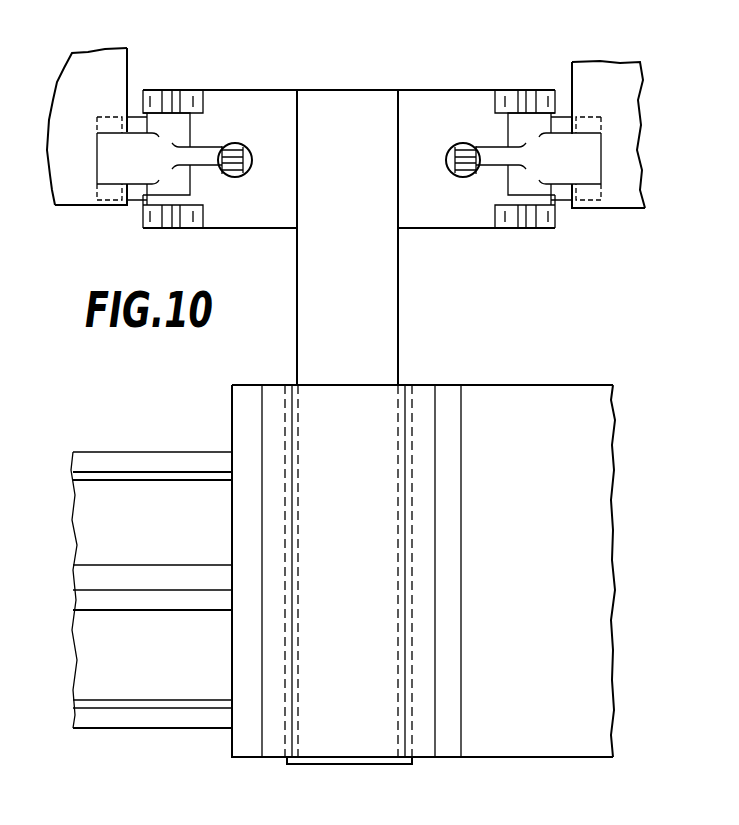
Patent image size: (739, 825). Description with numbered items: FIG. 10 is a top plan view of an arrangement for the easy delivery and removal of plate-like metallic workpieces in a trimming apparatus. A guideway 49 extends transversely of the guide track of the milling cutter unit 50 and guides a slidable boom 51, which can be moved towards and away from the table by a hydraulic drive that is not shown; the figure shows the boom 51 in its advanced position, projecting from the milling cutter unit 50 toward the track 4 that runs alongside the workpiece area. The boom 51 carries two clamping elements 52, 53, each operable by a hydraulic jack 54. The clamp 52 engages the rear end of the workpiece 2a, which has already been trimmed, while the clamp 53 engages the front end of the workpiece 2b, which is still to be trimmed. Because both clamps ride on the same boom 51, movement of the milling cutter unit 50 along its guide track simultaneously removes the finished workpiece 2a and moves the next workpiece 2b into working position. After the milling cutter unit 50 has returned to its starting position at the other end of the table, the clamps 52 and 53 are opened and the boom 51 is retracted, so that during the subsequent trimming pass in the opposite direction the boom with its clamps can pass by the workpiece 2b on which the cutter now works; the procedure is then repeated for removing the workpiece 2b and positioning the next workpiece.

The workpiece 2a is at (600, 97).
The workpiece 2b is at (115, 80).
The track 4 is at (168, 510).
The guideway 49 is at (283, 452).
The milling cutter unit 50 is at (527, 438).
The boom 51 is at (365, 495).
The clamping element 52 is at (590, 160).
The clamping element 53 is at (108, 160).
The hydraulic jack 54 is at (237, 143).